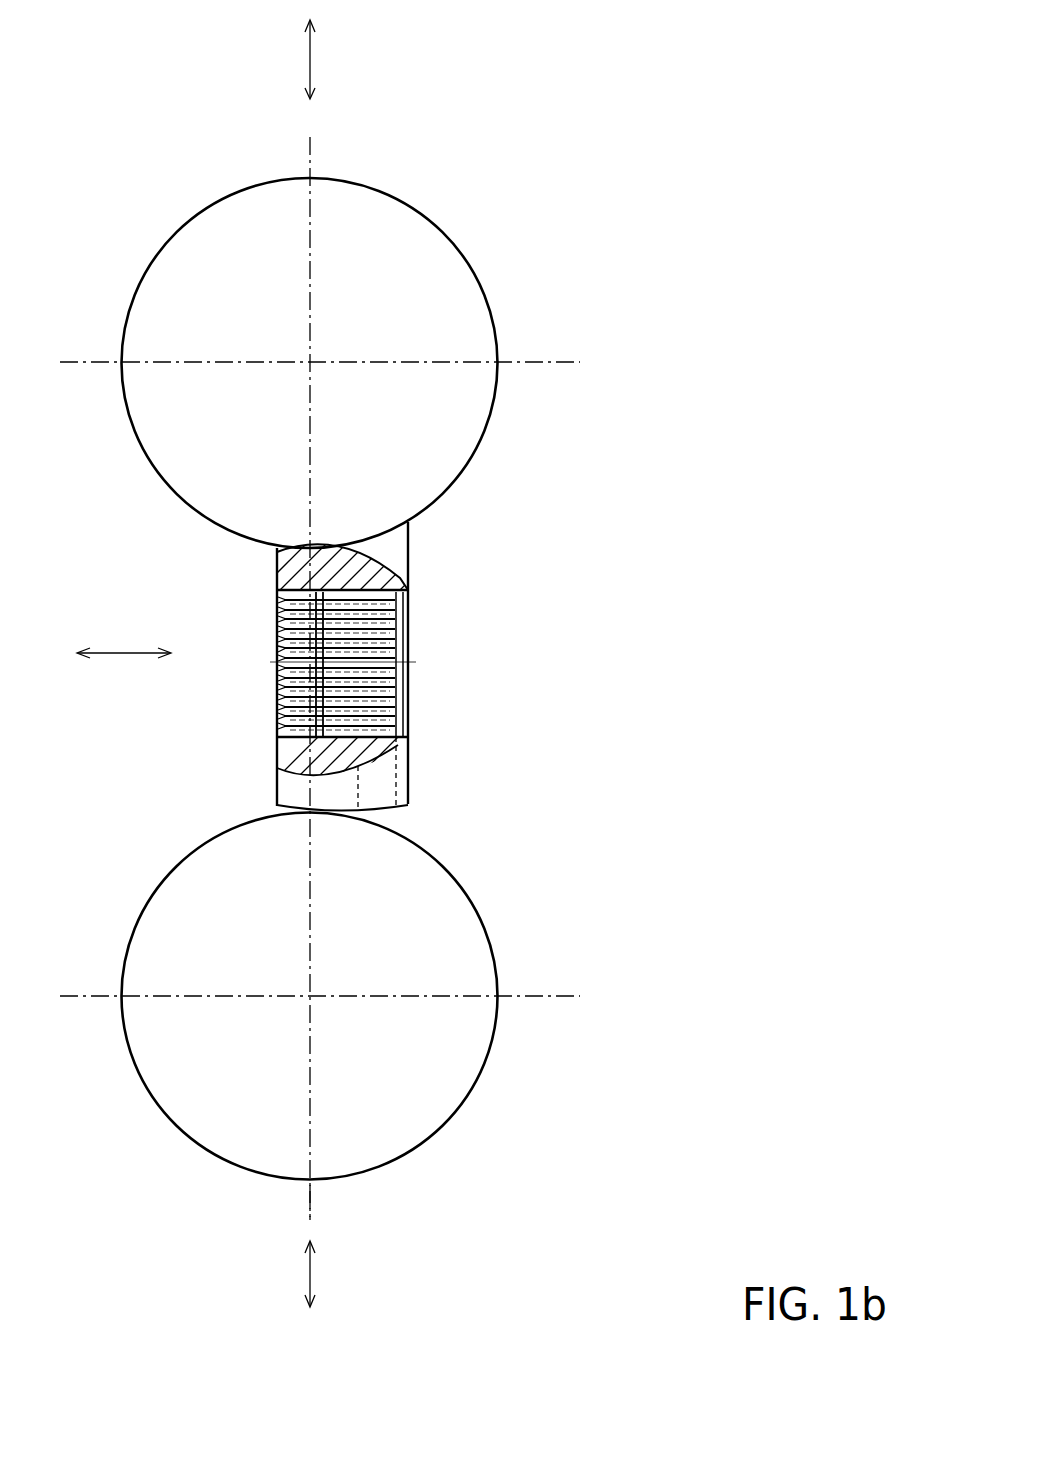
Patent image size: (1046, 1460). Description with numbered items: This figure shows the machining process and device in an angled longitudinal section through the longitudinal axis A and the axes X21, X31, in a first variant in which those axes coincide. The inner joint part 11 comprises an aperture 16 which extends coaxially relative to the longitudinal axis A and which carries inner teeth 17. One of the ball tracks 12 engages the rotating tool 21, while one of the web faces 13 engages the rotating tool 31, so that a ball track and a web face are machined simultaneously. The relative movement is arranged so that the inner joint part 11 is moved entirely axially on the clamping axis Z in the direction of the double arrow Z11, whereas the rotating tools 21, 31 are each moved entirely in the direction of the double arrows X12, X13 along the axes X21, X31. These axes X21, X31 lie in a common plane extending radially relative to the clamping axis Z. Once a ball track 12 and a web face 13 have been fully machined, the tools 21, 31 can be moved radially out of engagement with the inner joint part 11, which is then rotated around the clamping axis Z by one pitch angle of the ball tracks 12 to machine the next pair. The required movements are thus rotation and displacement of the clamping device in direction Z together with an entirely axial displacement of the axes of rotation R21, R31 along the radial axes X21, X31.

The inner joint part 11 is at (505, 575).
The ball track 12 is at (397, 557).
The web face 13 is at (397, 806).
The aperture 16 is at (420, 648).
The inner teeth 17 is at (397, 717).
The rotating tool 21 is at (505, 258).
The rotating tool 31 is at (512, 950).
The longitudinal axis A is at (408, 636).
The clamping axis Z is at (277, 678).
The double arrow Z11 is at (124, 629).
The double arrow X12 is at (337, 59).
The double arrow X13 is at (338, 1277).
The axis X21 is at (315, 152).
The axis X31 is at (312, 1203).
The axis of rotation R21 is at (312, 358).
The axis of rotation R31 is at (312, 995).